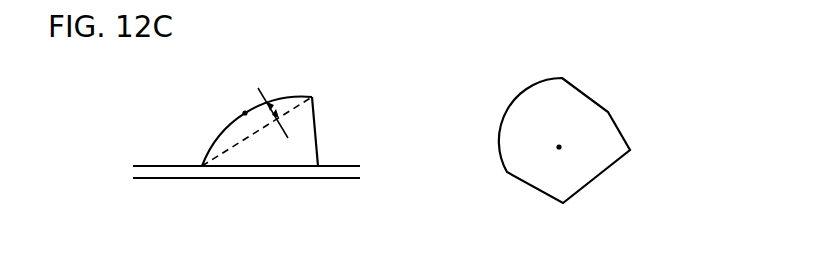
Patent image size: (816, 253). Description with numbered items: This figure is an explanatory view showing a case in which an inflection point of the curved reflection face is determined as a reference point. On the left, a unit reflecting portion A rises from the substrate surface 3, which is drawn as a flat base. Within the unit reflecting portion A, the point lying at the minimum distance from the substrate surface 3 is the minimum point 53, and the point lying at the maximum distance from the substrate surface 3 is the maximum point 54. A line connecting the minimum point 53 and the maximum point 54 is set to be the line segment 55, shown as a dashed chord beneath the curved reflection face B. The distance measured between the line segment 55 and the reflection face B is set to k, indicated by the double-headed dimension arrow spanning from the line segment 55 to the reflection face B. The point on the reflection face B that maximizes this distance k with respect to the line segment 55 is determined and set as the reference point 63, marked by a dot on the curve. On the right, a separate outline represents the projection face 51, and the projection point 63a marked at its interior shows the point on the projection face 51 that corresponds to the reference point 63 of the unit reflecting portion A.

The substrate surface 3 is at (338, 166).
The projection face 51 is at (573, 85).
The minimum point 53 is at (200, 165).
The maximum point 54 is at (312, 97).
The line segment 55 is at (248, 137).
The reference point 63 is at (245, 113).
The projection point 63a is at (559, 147).
The unit reflecting portion A is at (287, 152).
The reflection face B is at (218, 135).
The distance k is at (276, 112).